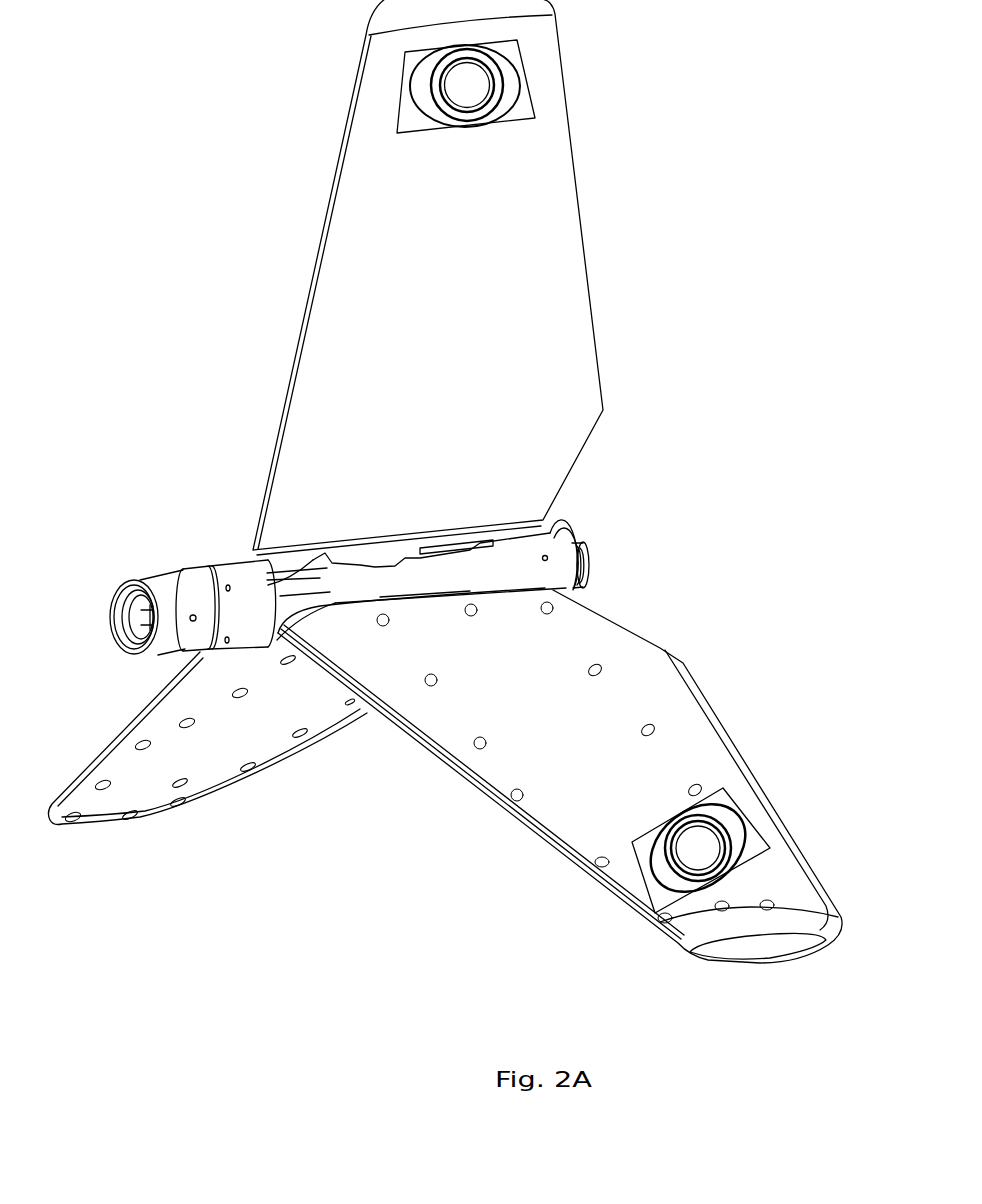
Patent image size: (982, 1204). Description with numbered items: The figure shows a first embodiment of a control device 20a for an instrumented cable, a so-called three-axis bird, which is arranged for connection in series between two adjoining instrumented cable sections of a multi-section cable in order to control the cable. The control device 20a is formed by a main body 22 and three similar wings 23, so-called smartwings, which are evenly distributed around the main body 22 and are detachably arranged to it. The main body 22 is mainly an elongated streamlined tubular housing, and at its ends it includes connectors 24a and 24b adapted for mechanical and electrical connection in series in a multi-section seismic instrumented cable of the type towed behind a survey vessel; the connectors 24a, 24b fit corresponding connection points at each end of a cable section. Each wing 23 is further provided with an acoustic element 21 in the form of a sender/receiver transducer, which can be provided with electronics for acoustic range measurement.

The control device 20a is at (218, 213).
The acoustic element 21 is at (550, 78).
The main body 22 is at (211, 531).
The wing 23 is at (553, 215).
The connector 24a is at (141, 555).
The connector 24b is at (584, 526).